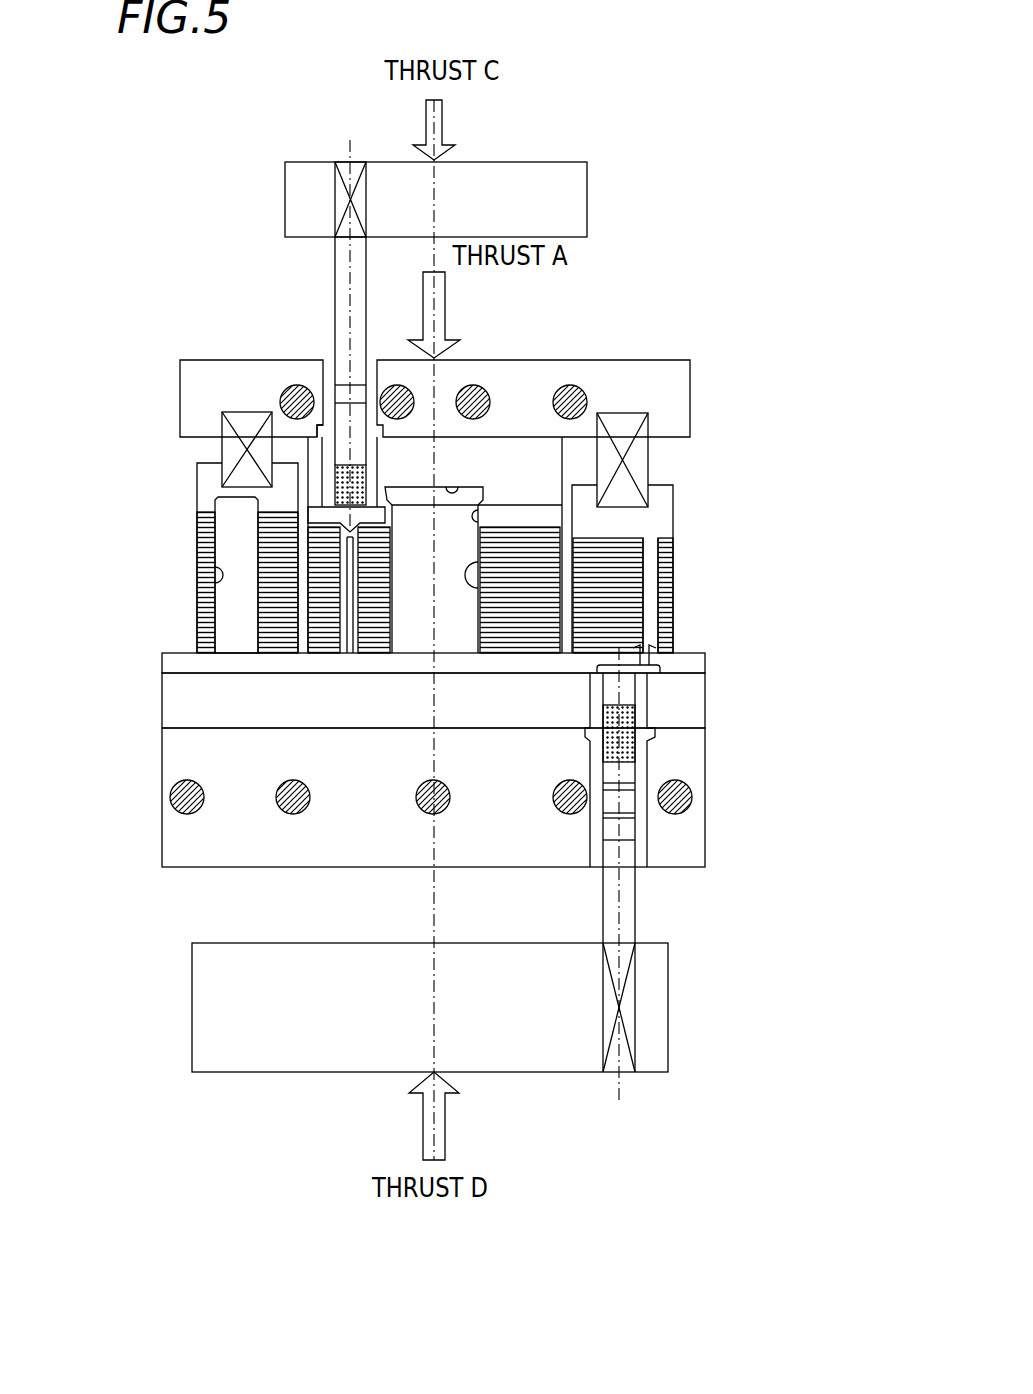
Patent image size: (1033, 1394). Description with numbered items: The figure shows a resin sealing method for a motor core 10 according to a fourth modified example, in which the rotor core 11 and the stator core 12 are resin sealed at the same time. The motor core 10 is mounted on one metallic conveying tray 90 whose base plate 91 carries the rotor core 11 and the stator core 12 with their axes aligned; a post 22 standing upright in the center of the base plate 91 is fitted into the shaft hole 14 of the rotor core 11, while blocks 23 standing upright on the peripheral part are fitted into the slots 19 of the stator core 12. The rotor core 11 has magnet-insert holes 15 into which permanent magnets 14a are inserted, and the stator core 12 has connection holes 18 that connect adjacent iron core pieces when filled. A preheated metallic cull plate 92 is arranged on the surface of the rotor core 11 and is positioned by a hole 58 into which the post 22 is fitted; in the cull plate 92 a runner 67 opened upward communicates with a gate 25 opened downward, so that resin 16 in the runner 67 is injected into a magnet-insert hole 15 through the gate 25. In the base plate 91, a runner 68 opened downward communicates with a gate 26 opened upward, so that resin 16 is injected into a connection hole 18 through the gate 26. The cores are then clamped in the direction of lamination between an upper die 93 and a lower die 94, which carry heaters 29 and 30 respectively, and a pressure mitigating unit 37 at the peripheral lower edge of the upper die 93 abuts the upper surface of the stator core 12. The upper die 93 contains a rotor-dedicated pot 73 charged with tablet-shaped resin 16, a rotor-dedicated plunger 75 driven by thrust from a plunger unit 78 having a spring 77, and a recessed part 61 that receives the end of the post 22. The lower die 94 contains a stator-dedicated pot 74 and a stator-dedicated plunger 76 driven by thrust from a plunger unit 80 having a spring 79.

The motor core 10 is at (188, 492).
The rotor core 11 is at (560, 512).
The stator core 12 is at (188, 522).
The shaft hole 14 is at (490, 585).
The permanent magnets 14a is at (347, 626).
The magnet-insert holes 15 is at (317, 598).
The resin 16 is at (367, 473).
The connection hole 18 is at (652, 598).
The slots 19 is at (217, 583).
The post 22 is at (528, 503).
The blocks 23 is at (232, 545).
The gate 25 is at (458, 518).
The gate 26 is at (640, 648).
The heater 29 is at (592, 392).
The heater 30 is at (278, 815).
The pressure mitigating unit 37 is at (188, 455).
The hole 58 is at (603, 450).
The recessed part 61 is at (483, 500).
The runner 67 is at (362, 527).
The runner 68 is at (643, 672).
The rotor-dedicated pot 73 is at (312, 433).
The stator-dedicated pot 74 is at (658, 740).
The rotor-dedicated plunger 75 is at (330, 393).
The stator-dedicated plunger 76 is at (637, 815).
The spring 77 is at (350, 175).
The plunger unit 78 is at (358, 157).
The spring 79 is at (627, 1008).
The plunger unit 80 is at (682, 1044).
The conveying tray 90 is at (160, 664).
The base plate 91 is at (207, 662).
The cull plate 92 is at (537, 523).
The upper die 93 is at (702, 363).
The lower die 94 is at (160, 768).